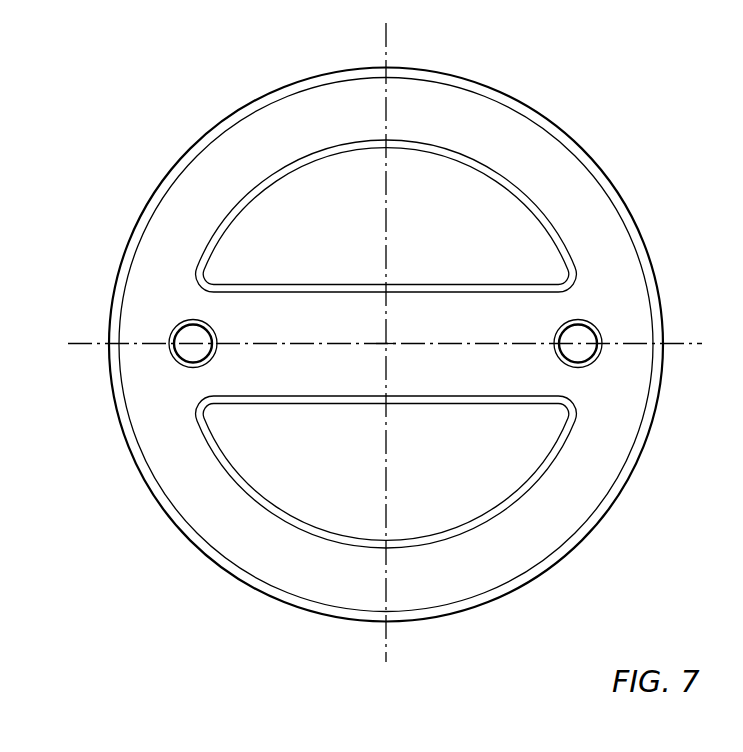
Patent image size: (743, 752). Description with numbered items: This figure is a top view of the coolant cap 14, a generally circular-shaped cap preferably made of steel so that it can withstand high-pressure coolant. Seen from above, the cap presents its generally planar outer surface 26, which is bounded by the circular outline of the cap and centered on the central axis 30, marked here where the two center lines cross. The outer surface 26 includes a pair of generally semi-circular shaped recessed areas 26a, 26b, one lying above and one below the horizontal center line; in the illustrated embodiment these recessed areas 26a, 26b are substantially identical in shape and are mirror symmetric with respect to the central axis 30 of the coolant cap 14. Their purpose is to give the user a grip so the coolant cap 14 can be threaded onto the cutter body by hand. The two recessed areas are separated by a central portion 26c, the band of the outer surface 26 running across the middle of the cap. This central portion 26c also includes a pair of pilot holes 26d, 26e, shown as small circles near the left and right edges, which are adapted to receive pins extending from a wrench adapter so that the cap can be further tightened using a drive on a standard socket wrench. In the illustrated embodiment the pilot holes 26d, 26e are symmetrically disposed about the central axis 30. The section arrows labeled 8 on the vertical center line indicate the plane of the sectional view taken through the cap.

The section line for FIG. 8 is at (322, 35).
The coolant cap 14 is at (652, 125).
The outer surface 26 is at (585, 240).
The recessed area 26a is at (437, 203).
The recessed area 26b is at (436, 486).
The central portion 26c is at (467, 372).
The pilot hole 26d is at (186, 353).
The pilot hole 26e is at (586, 353).
The central axis 30 is at (387, 343).